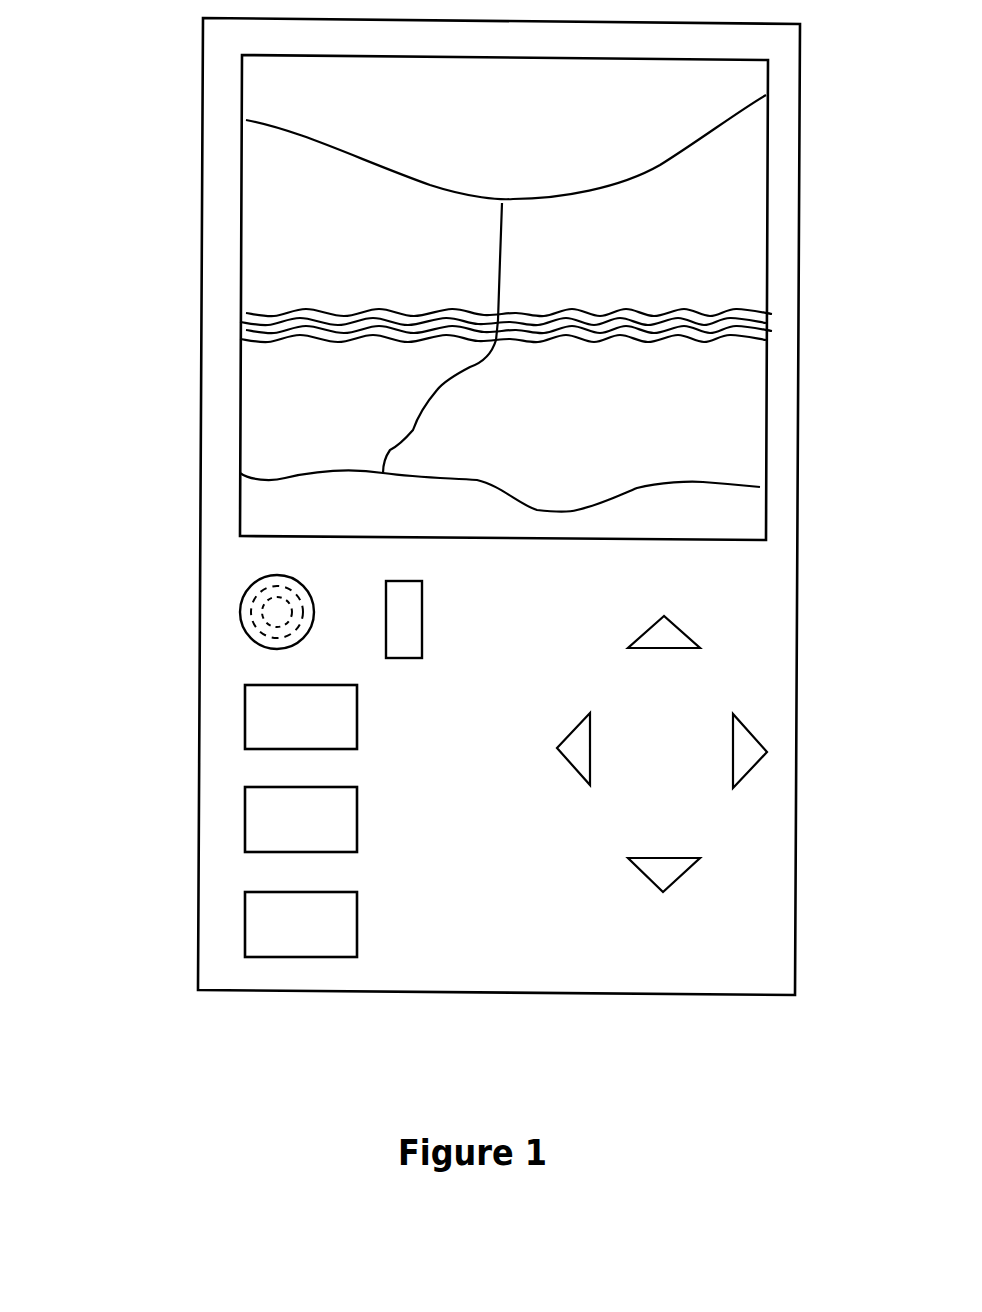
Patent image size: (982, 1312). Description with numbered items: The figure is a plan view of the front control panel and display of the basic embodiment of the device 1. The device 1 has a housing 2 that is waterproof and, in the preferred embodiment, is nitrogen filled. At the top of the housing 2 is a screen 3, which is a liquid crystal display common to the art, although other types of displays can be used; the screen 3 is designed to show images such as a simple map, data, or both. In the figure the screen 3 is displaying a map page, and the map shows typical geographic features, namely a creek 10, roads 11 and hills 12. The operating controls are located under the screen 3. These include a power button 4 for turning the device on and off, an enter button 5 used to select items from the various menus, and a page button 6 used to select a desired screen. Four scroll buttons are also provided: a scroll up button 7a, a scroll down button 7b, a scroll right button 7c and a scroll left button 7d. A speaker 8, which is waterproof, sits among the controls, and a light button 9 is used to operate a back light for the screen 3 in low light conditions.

The device 1 is at (125, 425).
The housing 2 is at (212, 495).
The screen 3 is at (697, 216).
The power button 4 is at (237, 923).
The enter button 5 is at (237, 812).
The page button 6 is at (242, 709).
The scroll up button 7a is at (673, 626).
The scroll down button 7b is at (685, 882).
The scroll right button 7c is at (758, 727).
The scroll left button 7d is at (572, 747).
The speaker 8 is at (255, 610).
The light button 9 is at (437, 601).
The creek 10 is at (360, 305).
The roads 11 is at (480, 397).
The hills 12 is at (590, 188).